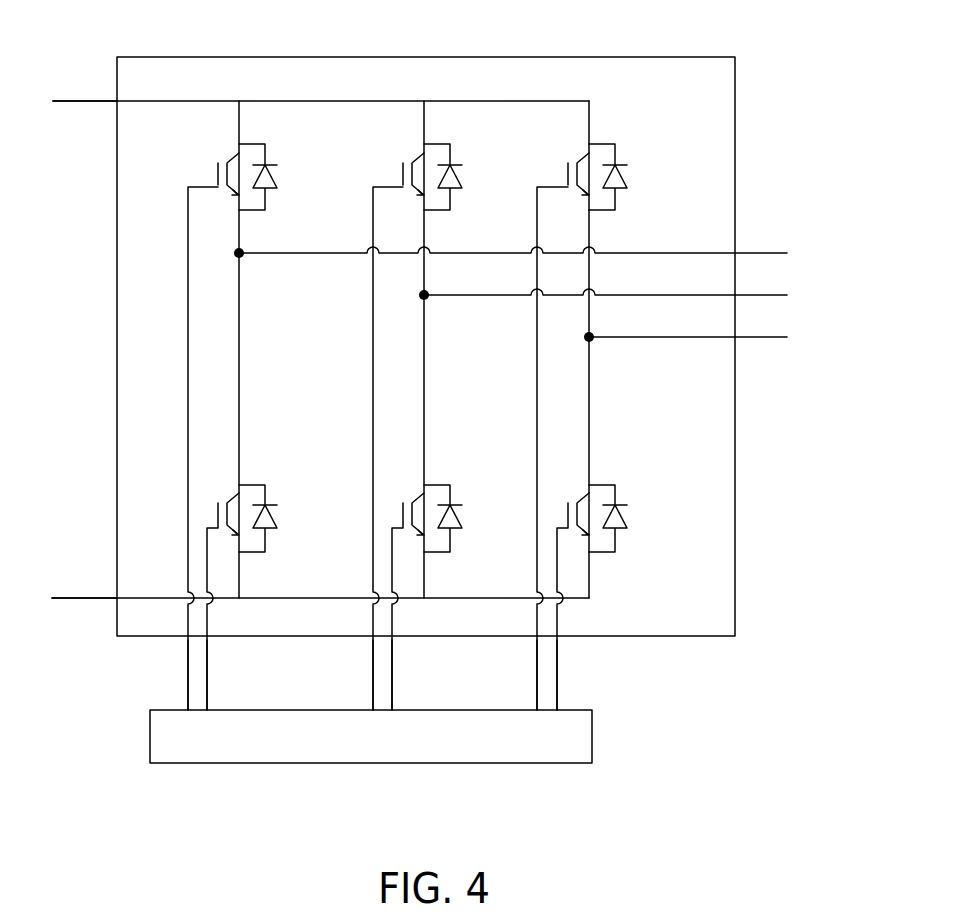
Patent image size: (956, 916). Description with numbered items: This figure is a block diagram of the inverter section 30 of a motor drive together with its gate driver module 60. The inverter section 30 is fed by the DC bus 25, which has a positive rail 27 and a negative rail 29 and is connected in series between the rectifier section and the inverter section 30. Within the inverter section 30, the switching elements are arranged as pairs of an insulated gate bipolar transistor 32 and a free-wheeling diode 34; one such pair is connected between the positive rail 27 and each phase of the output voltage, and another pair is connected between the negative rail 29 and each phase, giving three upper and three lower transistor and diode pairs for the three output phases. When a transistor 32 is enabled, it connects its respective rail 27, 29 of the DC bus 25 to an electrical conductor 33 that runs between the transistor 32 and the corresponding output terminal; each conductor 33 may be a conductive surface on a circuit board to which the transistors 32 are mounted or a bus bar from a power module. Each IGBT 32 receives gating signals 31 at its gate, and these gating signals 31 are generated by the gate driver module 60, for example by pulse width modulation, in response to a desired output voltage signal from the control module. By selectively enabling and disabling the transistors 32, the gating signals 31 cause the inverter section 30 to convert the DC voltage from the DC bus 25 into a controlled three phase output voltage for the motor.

The inverter section 30 is at (427, 57).
The positive rail 27 is at (83, 101).
The negative rail 29 is at (75, 602).
The DC bus 25 is at (97, 110).
The insulated gate bipolar transistor (IGBT) 32 is at (210, 175).
The free-wheeling diode 34 is at (279, 166).
The electrical conductor 33 is at (763, 244).
The gating signals 31 is at (207, 676).
The gate driver module 60 is at (255, 765).